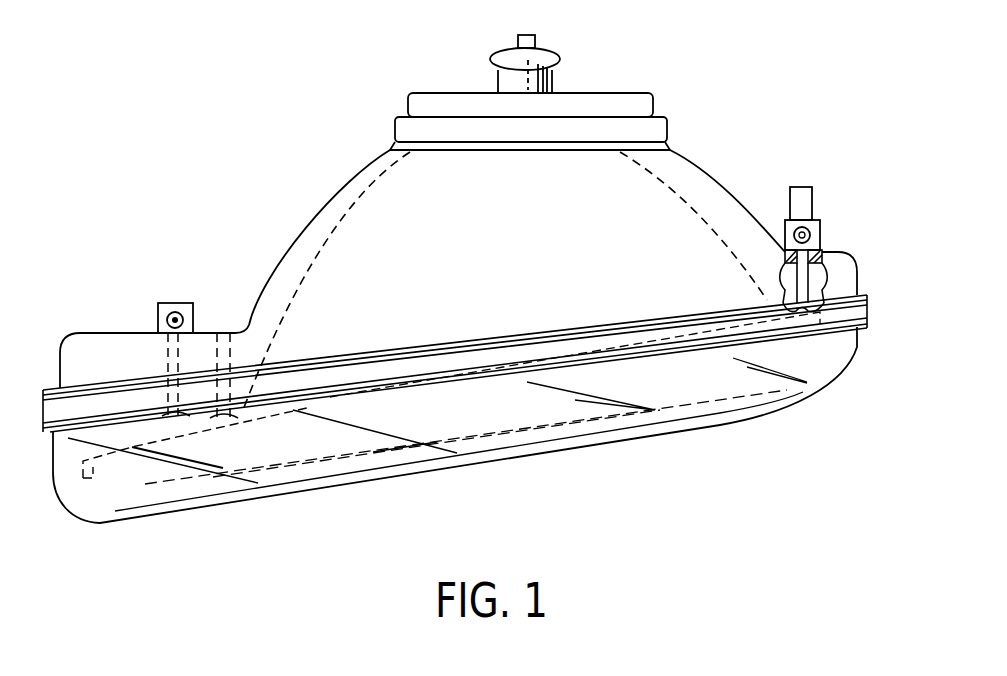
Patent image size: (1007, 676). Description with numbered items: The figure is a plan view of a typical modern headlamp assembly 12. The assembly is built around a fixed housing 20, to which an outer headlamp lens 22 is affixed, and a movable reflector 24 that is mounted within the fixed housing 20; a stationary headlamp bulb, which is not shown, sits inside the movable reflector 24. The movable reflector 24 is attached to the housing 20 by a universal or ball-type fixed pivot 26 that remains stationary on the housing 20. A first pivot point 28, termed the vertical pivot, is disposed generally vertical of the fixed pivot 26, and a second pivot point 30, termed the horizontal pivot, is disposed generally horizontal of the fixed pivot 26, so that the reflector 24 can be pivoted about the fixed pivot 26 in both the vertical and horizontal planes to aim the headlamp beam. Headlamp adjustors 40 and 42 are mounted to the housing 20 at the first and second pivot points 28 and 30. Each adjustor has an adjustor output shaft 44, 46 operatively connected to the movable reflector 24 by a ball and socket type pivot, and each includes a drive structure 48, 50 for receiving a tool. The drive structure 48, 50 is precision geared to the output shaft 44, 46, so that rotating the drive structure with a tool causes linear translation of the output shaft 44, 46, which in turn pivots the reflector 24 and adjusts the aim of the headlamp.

The headlamp assembly 12 is at (345, 105).
The fixed housing 20 is at (275, 268).
The outer headlamp lens 22 is at (696, 431).
The movable reflector 24 is at (340, 217).
The fixed pivot 26 is at (240, 328).
The first pivot point 28 is at (133, 443).
The second pivot point 30 is at (867, 297).
The headlamp adjustor 40 is at (164, 302).
The headlamp adjustor 42 is at (825, 231).
The adjustor output shaft 44 is at (163, 362).
The adjustor output shaft 46 is at (800, 288).
The drive structure 48 is at (172, 319).
The drive structure 50 is at (787, 231).